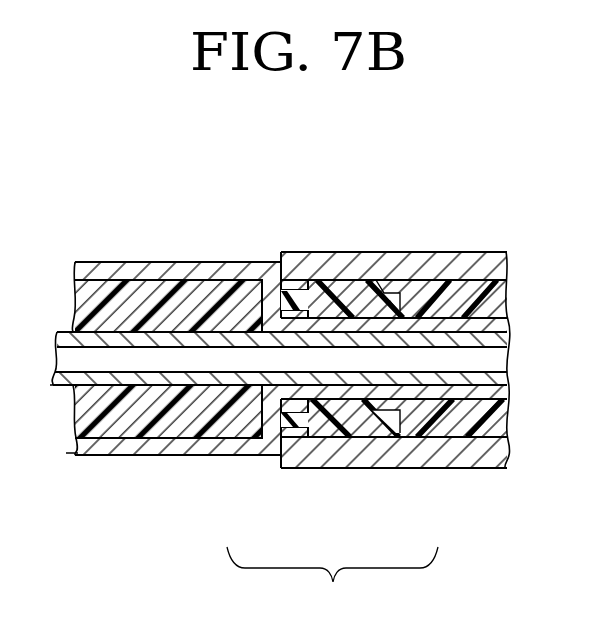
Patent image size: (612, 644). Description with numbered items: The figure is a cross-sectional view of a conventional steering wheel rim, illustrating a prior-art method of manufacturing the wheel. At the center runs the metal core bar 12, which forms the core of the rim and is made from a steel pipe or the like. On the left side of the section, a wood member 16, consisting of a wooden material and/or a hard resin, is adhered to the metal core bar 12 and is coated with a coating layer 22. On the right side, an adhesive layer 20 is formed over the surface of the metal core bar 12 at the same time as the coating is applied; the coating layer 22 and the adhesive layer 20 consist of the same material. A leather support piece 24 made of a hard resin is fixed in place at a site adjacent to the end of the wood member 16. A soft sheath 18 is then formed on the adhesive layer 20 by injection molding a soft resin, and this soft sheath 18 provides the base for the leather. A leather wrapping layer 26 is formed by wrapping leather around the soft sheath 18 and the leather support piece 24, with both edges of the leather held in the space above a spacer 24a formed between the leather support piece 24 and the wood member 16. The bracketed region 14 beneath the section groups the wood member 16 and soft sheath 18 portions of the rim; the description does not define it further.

The metal core bar 12 is at (157, 380).
The laminated assembly 14 is at (332, 581).
The wood member 16 is at (127, 295).
The soft sheath 18 is at (445, 425).
The adhesive layer 20 is at (391, 351).
The coating layer 22 is at (192, 267).
The leather support piece 24 is at (386, 239).
The spacer 24a is at (295, 302).
The leather wrapping layer 26 is at (418, 265).